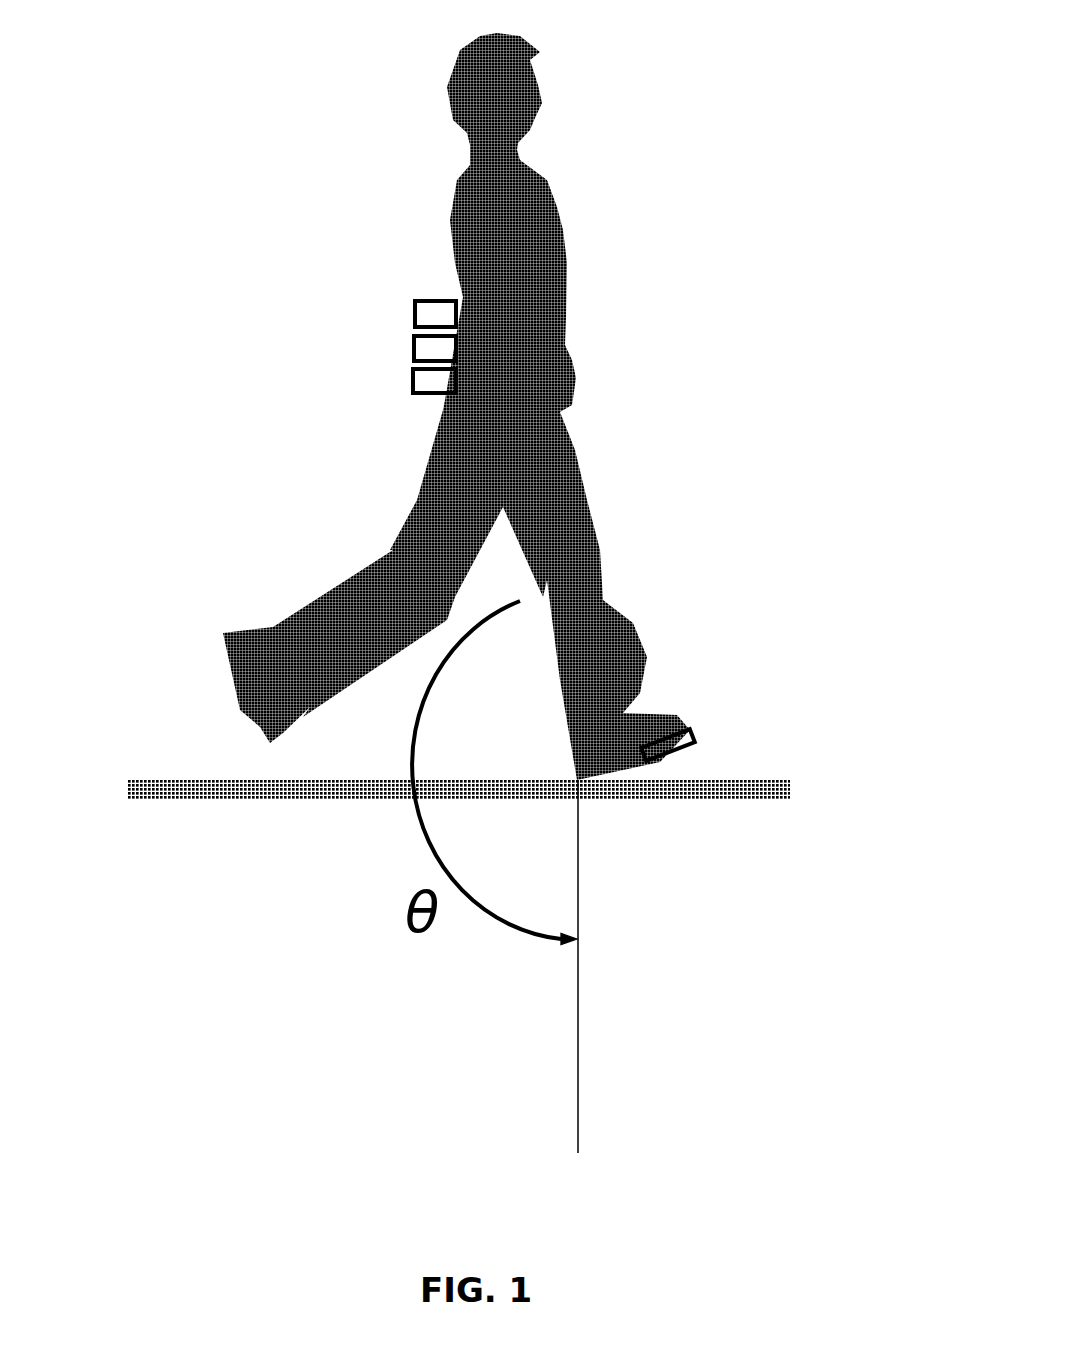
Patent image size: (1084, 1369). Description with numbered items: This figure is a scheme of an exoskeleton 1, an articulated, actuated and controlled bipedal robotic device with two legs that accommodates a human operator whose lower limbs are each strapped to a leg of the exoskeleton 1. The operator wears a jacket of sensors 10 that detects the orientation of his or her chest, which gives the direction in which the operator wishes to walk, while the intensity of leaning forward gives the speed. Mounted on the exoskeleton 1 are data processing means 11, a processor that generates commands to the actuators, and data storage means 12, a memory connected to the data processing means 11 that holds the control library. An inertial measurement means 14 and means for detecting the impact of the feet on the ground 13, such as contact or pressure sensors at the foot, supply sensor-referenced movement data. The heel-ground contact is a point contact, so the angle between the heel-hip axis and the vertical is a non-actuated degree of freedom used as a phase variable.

The jacket of sensors 10 is at (579, 224).
The exoskeleton 1 is at (504, 336).
The inertial measurement means 14 is at (399, 297).
The data storage means 12 is at (398, 346).
The data processing means 11 is at (397, 383).
The means for detecting the impact of the feet on the ground 13 is at (711, 724).